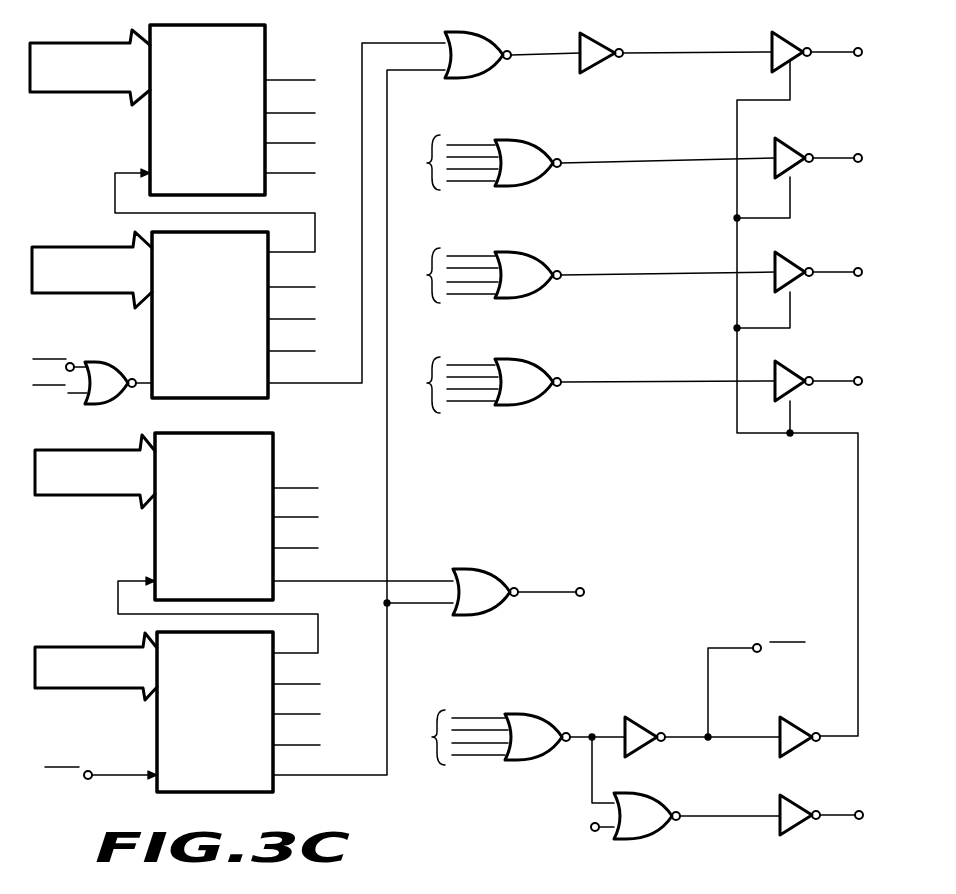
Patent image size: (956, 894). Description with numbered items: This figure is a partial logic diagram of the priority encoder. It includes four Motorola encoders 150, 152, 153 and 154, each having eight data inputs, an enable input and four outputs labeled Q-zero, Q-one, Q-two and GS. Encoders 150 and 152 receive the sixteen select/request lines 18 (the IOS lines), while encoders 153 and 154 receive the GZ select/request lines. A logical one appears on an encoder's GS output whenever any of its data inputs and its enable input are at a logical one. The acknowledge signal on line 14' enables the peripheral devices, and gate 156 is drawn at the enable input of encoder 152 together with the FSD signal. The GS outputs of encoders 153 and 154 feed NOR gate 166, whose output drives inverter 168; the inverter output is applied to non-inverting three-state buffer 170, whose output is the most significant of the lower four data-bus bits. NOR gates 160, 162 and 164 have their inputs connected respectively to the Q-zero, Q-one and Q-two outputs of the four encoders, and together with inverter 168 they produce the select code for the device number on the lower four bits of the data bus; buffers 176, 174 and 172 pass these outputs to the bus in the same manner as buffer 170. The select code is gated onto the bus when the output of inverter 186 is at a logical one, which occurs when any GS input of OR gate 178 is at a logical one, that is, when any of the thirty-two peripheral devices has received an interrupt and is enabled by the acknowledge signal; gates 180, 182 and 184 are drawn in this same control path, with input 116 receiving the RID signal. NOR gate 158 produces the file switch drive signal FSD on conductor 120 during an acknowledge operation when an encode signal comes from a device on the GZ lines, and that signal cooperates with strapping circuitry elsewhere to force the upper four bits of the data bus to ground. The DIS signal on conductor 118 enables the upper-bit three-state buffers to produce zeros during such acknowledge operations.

The encoder 150 is at (237, 27).
The encoder 152 is at (200, 400).
The encoder 153 is at (246, 433).
The encoder 154 is at (258, 793).
The select/request lines 18 is at (71, 104).
The acknowledge signal line 14' is at (95, 549).
The NOR gate 156 is at (115, 362).
The NOR gate 158 is at (495, 568).
The conductor 120 is at (580, 588).
The NOR gate 160 is at (527, 365).
The NOR gate 162 is at (529, 258).
The NOR gate 164 is at (534, 147).
The NOR gate 166 is at (482, 44).
The inverter 168 is at (600, 44).
The non-inverting three-state buffer 170 is at (793, 42).
The inverter 172 is at (791, 152).
The inverter 174 is at (794, 264).
The inverter 176 is at (794, 374).
The OR gate 178 is at (537, 715).
The NOR gate 180 is at (650, 800).
The inverter 182 is at (645, 720).
The inverter 184 is at (795, 806).
The inverter 186 is at (797, 726).
The RID input terminal 116 is at (597, 835).
The conductor 118 is at (860, 808).